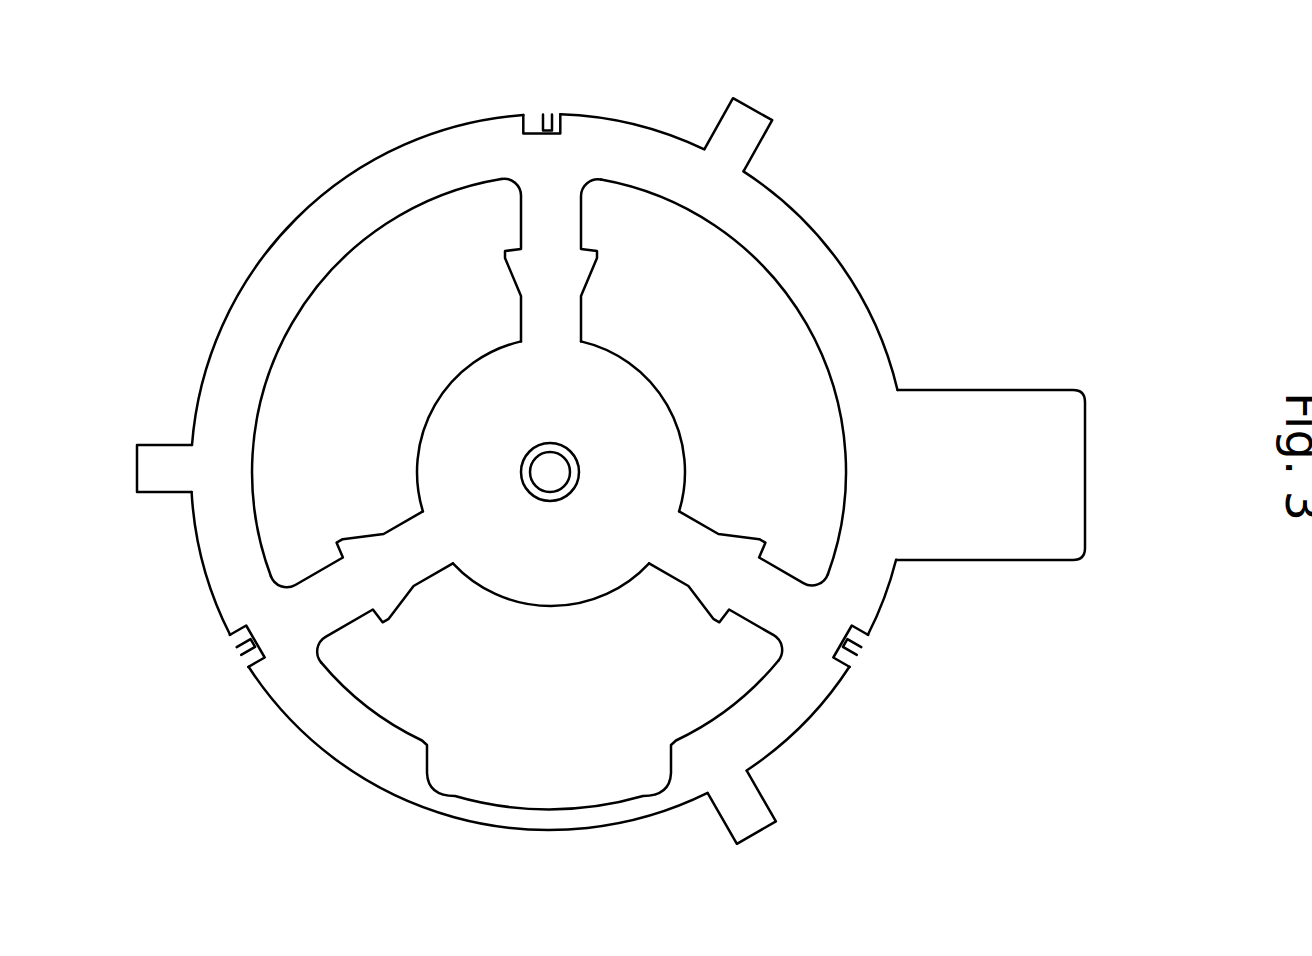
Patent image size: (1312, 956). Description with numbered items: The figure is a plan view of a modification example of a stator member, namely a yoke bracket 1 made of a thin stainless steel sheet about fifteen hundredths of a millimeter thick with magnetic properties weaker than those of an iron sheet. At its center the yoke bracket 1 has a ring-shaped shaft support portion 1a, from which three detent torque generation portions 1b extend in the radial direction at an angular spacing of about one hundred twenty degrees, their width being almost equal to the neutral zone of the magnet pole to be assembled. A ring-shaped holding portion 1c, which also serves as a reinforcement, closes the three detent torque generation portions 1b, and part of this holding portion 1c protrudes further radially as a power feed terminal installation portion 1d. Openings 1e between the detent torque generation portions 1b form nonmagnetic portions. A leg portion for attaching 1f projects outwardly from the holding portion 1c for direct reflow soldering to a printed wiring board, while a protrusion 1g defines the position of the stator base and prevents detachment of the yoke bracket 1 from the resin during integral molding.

The yoke bracket 1 is at (853, 708).
The shaft support portion 1a is at (580, 468).
The detent torque generation portion 1b is at (570, 278).
The holding portion 1c is at (773, 233).
The power feed terminal installation portion 1d is at (985, 510).
The opening 1e is at (422, 290).
The leg portion for attaching 1f is at (160, 468).
The protrusion 1g is at (258, 648).